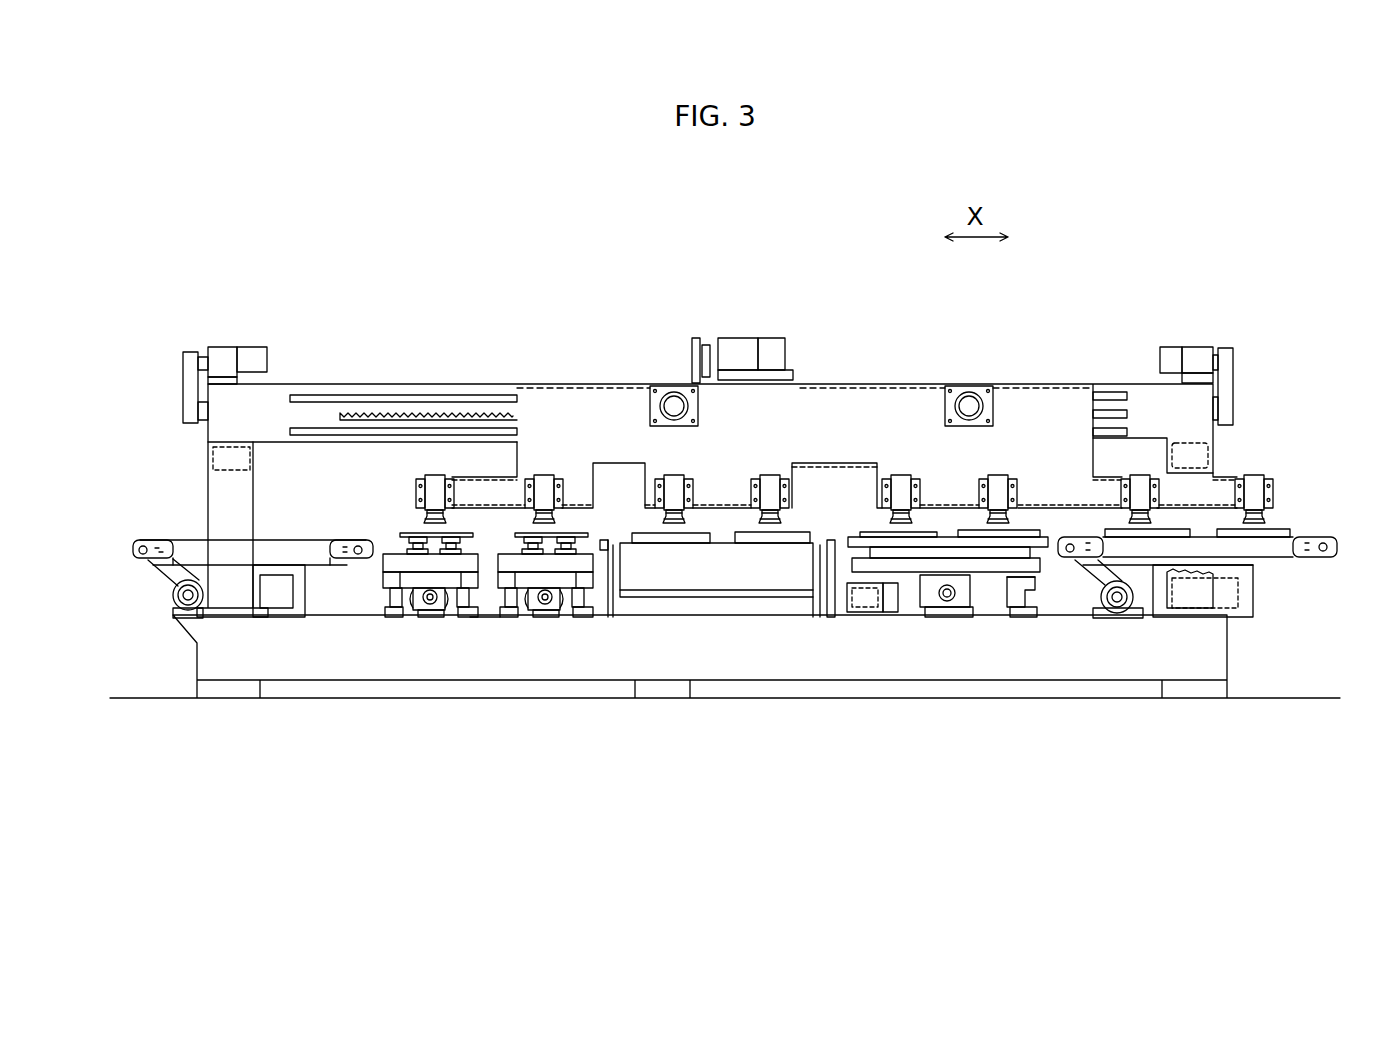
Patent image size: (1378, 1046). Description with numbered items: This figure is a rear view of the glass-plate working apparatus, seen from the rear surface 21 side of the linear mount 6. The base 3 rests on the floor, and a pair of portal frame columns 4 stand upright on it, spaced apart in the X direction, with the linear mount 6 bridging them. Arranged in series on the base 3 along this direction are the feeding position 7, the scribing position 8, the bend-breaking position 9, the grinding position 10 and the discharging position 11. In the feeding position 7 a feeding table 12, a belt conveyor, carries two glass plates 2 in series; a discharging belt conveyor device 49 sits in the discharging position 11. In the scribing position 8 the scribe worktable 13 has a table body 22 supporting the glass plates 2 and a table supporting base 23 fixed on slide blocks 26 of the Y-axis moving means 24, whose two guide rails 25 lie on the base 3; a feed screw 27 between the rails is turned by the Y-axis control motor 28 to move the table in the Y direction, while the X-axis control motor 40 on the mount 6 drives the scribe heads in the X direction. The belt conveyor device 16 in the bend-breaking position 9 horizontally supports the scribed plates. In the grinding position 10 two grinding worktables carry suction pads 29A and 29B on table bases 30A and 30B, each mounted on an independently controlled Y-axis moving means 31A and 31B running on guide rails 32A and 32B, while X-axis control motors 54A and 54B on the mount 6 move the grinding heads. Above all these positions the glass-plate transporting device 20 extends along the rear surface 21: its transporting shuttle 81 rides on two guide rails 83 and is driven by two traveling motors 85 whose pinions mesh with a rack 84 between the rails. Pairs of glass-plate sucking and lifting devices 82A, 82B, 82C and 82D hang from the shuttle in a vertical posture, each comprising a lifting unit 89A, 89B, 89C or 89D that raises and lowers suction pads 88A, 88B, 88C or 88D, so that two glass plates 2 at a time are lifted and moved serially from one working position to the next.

The glass plate 2 is at (643, 542).
The base 3 is at (232, 640).
The frame column 4 is at (218, 482).
The linear mount 6 is at (262, 412).
The feeding position 7 is at (1203, 520).
The scribing position 8 is at (1013, 580).
The bend-breaking position 9 is at (1060, 417).
The grinding position 10 is at (487, 567).
The discharging position 11 is at (187, 532).
The feeding table 12 is at (1257, 553).
The scribe worktable 13 is at (1027, 580).
The belt conveyor device 16 is at (700, 570).
The glass-plate transporting device 20 is at (862, 405).
The rear surface 21 is at (1178, 407).
The table body 22 is at (915, 537).
The table supporting base 23 is at (905, 560).
The Y-axis moving means 24 is at (923, 600).
The guide rail 25 is at (1030, 580).
The slide block 26 is at (863, 567).
The feed screw 27 is at (987, 567).
The Y-axis control motor 28 is at (980, 590).
The suction pad 29A is at (568, 550).
The suction pad 29B is at (408, 540).
The table base 30A is at (545, 567).
The table base 30B is at (410, 567).
The Y-axis moving means 31A is at (560, 580).
The Y-axis moving means 31B is at (437, 600).
The guide rail 32A is at (535, 567).
The guide rail 32B is at (413, 563).
The X-axis control motor 40 is at (1200, 360).
The discharging belt conveyor device 49 is at (175, 588).
The X-axis control motor 54A is at (773, 350).
The X-axis control motor 54B is at (222, 365).
The transporting shuttle 81 is at (588, 403).
The glass-plate sucking and lifting device 82A is at (1260, 473).
The glass-plate sucking and lifting device 82B is at (905, 500).
The glass-plate sucking and lifting device 82C is at (673, 500).
The glass-plate sucking and lifting device 82D is at (435, 497).
The guide rail 83 is at (320, 397).
The rack 84 is at (455, 413).
The traveling motor 85 is at (677, 404).
The suction pad 88A is at (1268, 523).
The suction pad 88B is at (903, 525).
The suction pad 88C is at (673, 525).
The suction pad 88D is at (427, 518).
The lifting unit 89A is at (1148, 490).
The lifting unit 89B is at (895, 495).
The lifting unit 89C is at (682, 487).
The lifting unit 89D is at (545, 497).